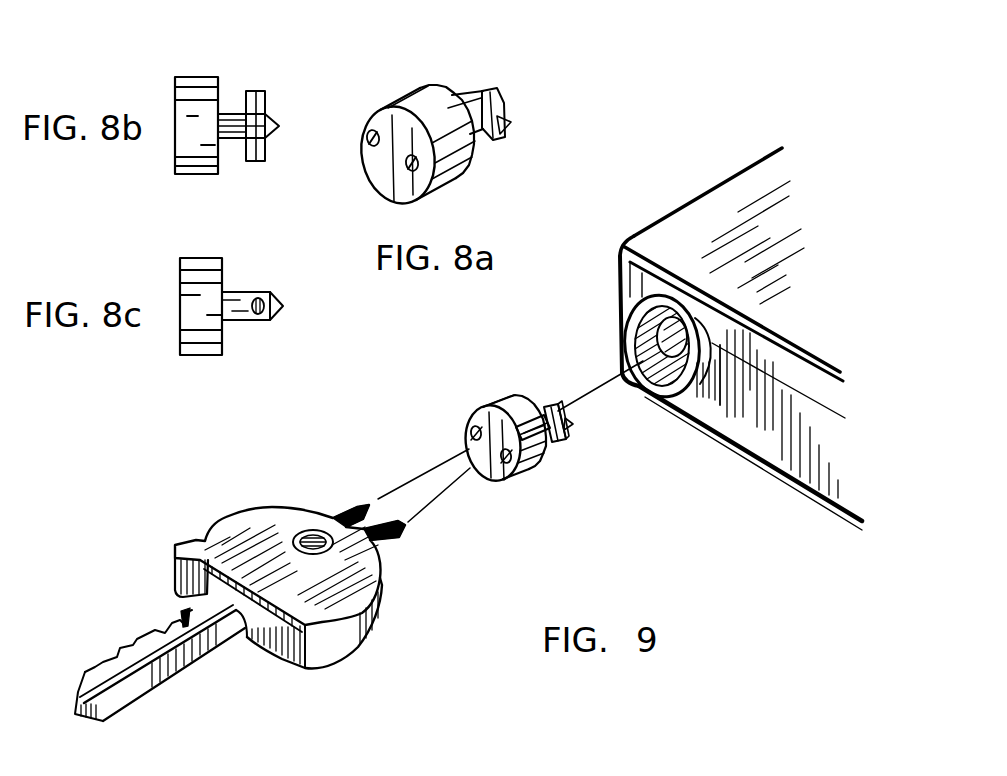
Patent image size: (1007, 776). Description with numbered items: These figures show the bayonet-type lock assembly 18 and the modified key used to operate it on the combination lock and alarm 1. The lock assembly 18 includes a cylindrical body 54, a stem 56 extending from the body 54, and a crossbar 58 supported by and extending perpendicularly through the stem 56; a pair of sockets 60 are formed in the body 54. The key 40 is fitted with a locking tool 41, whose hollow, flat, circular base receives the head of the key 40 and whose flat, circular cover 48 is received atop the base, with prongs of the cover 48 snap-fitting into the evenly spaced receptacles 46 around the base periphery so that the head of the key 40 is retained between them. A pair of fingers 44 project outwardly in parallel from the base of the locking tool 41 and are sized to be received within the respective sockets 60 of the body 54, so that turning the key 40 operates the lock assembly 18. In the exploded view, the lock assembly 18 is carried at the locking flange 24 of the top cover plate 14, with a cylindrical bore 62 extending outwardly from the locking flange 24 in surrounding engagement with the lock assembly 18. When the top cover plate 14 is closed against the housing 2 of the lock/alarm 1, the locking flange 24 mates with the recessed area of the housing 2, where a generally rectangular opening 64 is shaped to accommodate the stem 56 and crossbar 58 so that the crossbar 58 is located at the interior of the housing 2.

In FIG. 9, the combination lock and alarm 1 is at (686, 189).
In FIG. 9, the housing 2 is at (812, 493).
In FIG. 9, the top cover plate 14 is at (758, 187).
In FIG. 8B, the lock assembly 18 is at (233, 166).
In FIG. 8C, the lock assembly 18 is at (250, 280).
In FIG. 8A, the lock assembly 18 is at (515, 97).
In FIG. 9, the locking flange 24 is at (757, 433).
In FIG. 9, the key 40 is at (145, 688).
In FIG. 9, the locking tool 41 is at (283, 579).
In FIG. 9, the fingers 44 is at (398, 518).
In FIG. 9, the receptacles 46 is at (292, 577).
In FIG. 9, the cover 48 is at (267, 520).
In FIG. 8B, the cylindrical body 54 is at (209, 76).
In FIG. 8C, the cylindrical body 54 is at (202, 358).
In FIG. 8A, the cylindrical body 54 is at (400, 95).
In FIG. 9, the cylindrical body 54 is at (532, 467).
In FIG. 8B, the stem 56 is at (228, 110).
In FIG. 8C, the stem 56 is at (237, 322).
In FIG. 8A, the stem 56 is at (471, 92).
In FIG. 9, the stem 56 is at (547, 410).
In FIG. 8B, the crossbar 58 is at (265, 107).
In FIG. 8C, the crossbar 58 is at (255, 322).
In FIG. 8A, the crossbar 58 is at (478, 143).
In FIG. 9, the crossbar 58 is at (568, 437).
In FIG. 8A, the sockets 60 is at (388, 168).
In FIG. 9, the sockets 60 is at (477, 470).
In FIG. 9, the cylindrical bore 62 is at (658, 406).
In FIG. 9, the rectangular opening 64 is at (695, 338).